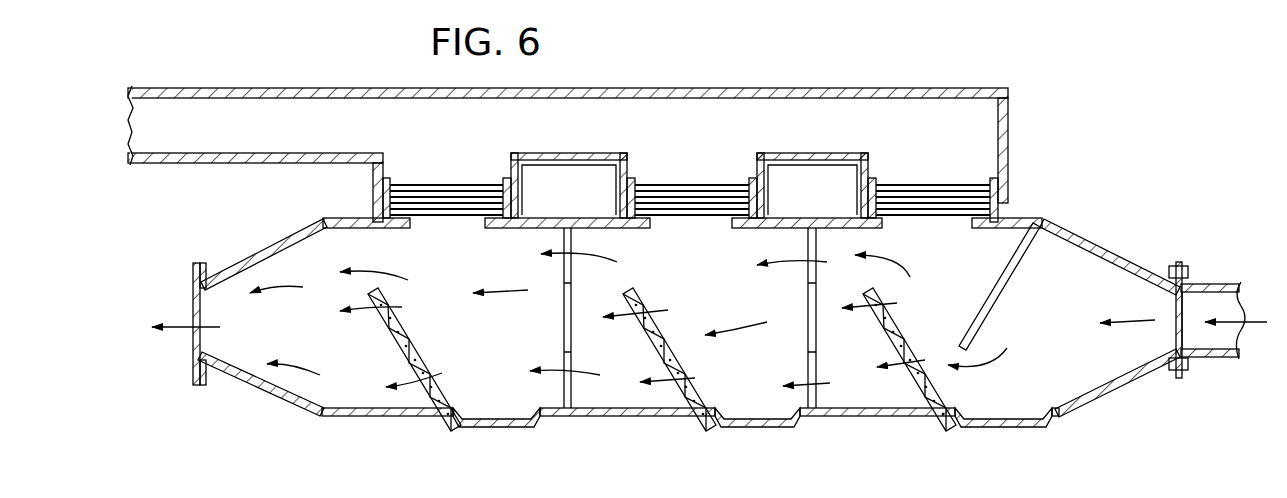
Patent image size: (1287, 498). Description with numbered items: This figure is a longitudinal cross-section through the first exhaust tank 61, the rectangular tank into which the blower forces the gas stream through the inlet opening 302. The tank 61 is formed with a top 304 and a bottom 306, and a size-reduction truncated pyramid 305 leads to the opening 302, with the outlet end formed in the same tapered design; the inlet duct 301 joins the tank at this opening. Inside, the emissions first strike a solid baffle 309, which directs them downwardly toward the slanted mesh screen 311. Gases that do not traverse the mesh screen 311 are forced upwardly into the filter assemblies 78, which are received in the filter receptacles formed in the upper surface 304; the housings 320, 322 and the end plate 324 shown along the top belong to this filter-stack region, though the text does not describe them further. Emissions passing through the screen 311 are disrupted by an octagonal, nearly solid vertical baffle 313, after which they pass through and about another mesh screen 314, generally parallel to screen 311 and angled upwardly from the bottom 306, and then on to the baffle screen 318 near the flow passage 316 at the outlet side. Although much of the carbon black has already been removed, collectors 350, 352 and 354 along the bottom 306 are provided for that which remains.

The first exhaust tank 61 is at (1103, 237).
The filter assembly 78 is at (463, 200).
The inlet duct 301 is at (1215, 280).
The opening 302 is at (1188, 328).
The top 304 is at (353, 217).
The size-reduction truncated pyramid 305 is at (1123, 385).
The bottom 306 is at (583, 416).
The solid baffle 309 is at (985, 323).
The mesh screen 311 is at (890, 343).
The vertical baffle 313 is at (805, 333).
The mesh screen 314 is at (648, 337).
The flow passage 316 is at (391, 326).
The baffle screen 318 is at (382, 333).
The housing 320 is at (515, 205).
The housing 322 is at (756, 205).
The end plate 324 is at (998, 213).
The collector 350 is at (952, 427).
The collector 352 is at (768, 422).
The collector 354 is at (458, 425).